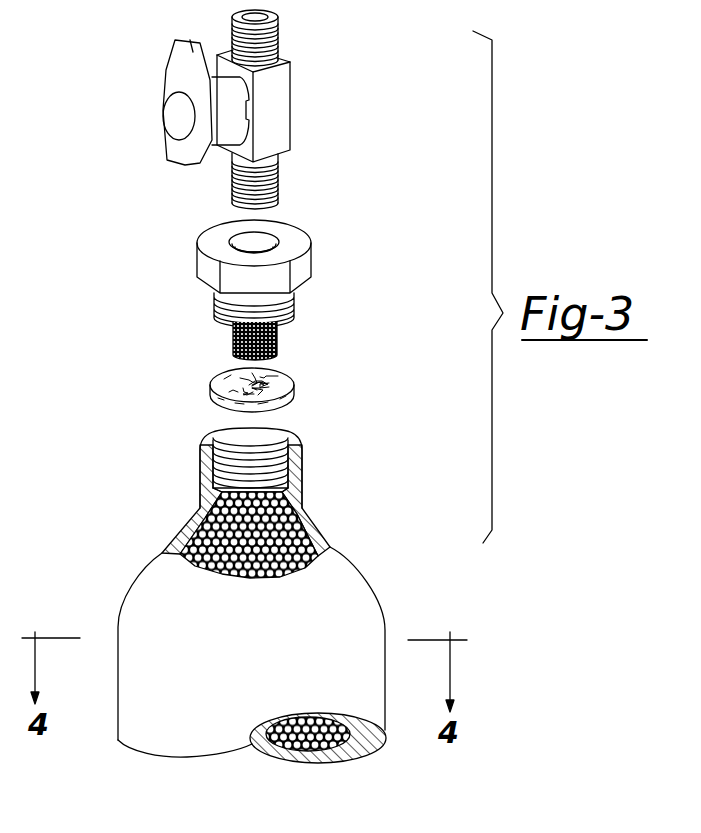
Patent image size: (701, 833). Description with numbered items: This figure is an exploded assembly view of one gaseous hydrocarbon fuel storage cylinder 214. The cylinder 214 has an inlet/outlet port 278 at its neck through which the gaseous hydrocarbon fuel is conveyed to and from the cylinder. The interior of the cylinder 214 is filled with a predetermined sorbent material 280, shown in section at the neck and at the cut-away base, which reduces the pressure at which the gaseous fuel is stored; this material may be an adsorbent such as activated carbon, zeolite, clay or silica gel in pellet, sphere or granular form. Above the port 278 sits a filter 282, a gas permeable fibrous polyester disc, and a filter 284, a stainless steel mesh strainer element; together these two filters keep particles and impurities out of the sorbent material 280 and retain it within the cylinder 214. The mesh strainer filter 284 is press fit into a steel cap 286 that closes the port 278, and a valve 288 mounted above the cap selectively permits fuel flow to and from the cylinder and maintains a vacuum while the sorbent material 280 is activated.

The valve 288 is at (280, 128).
The steel cap 286 is at (298, 243).
The filter 284 is at (233, 333).
The filter 282 is at (290, 378).
The inlet/outlet port 278 is at (273, 450).
The storage cylinder 214 is at (275, 616).
The sorbent material 280 is at (318, 752).